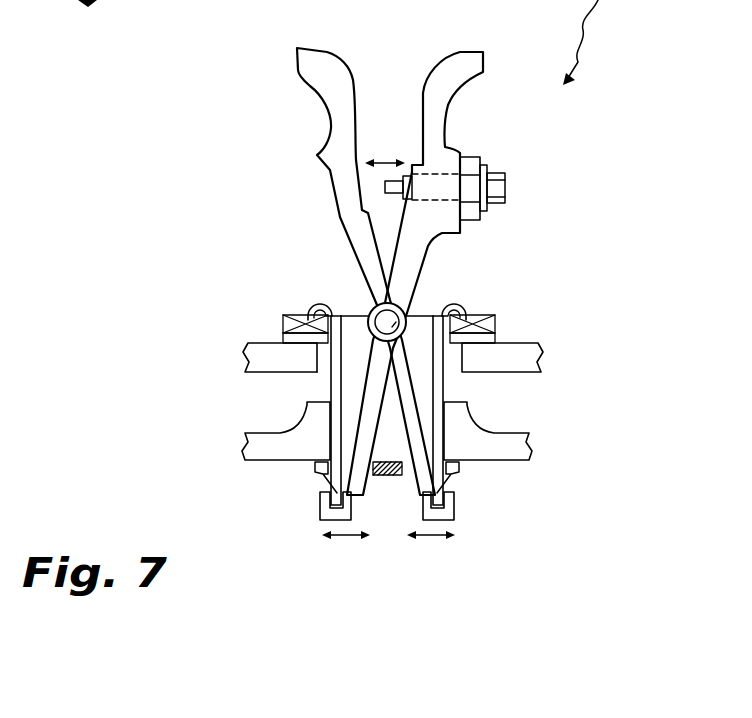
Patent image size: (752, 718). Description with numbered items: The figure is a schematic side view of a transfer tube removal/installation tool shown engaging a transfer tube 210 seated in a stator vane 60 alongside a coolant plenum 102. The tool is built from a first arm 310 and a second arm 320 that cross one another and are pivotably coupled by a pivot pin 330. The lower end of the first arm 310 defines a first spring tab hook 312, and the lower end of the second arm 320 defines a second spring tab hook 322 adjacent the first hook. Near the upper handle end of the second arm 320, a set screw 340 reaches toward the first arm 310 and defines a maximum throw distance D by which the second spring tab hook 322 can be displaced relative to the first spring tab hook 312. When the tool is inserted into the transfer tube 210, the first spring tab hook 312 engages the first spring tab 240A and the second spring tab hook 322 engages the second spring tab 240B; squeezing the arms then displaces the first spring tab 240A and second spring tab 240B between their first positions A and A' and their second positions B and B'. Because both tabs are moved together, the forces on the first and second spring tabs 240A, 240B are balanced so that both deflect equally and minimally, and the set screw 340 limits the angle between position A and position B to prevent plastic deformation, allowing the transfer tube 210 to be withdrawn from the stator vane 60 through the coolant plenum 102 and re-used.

The stator vane 60 is at (525, 452).
The coolant plenum 102 is at (330, 271).
The transfer tube 210 is at (426, 383).
The first spring tab 240A is at (458, 470).
The second spring tab 240B is at (318, 478).
The first arm 310 is at (328, 170).
The first spring tab hook 312 is at (318, 512).
The second arm 320 is at (445, 147).
The second spring tab hook 322 is at (458, 516).
The pivot pin 330 is at (408, 314).
The set screw 340 is at (500, 188).
The maximum throw distance D is at (390, 160).
The first position A is at (448, 550).
The second position B is at (425, 550).
The first position A' is at (333, 550).
The second position B' is at (359, 550).